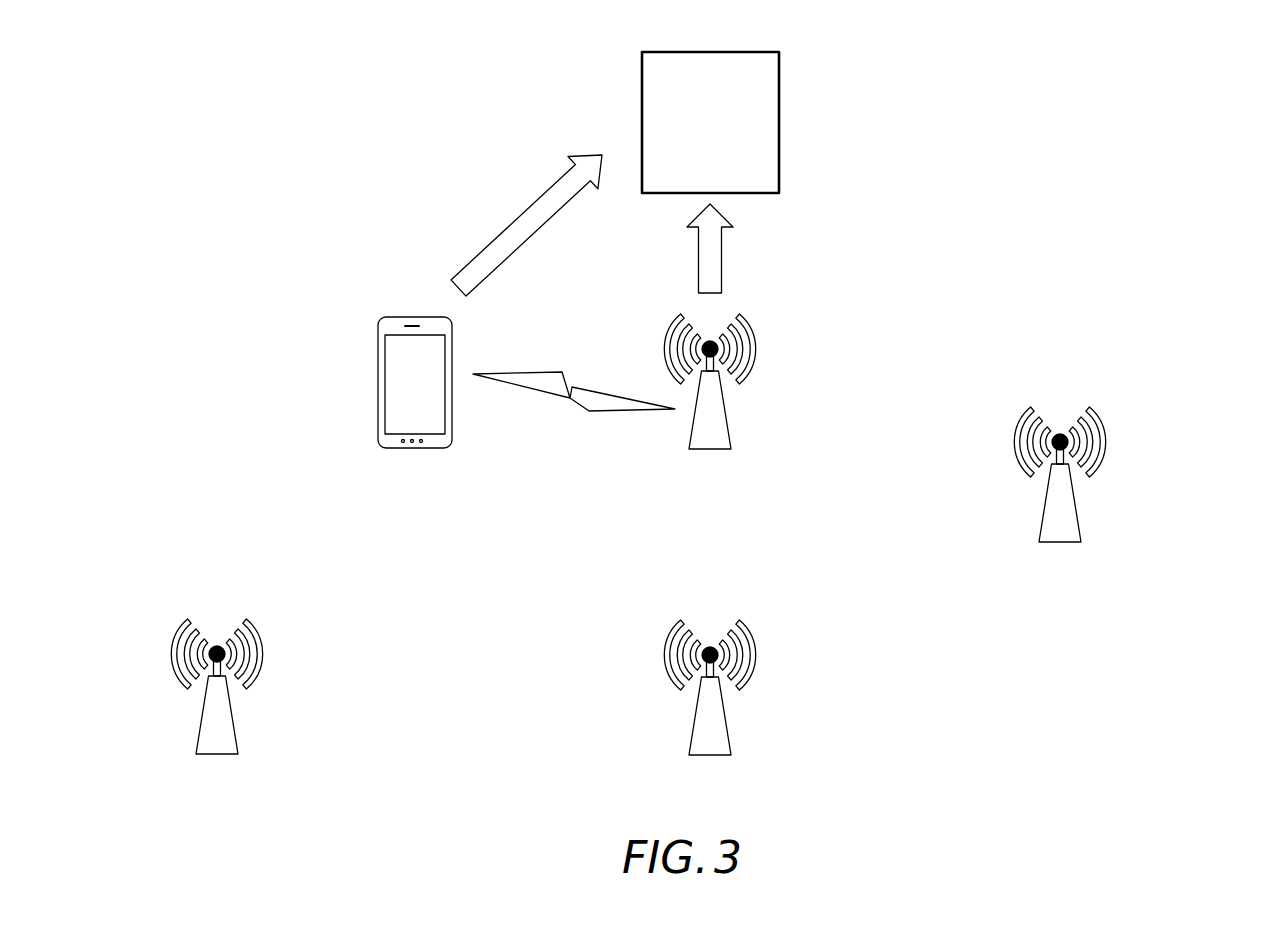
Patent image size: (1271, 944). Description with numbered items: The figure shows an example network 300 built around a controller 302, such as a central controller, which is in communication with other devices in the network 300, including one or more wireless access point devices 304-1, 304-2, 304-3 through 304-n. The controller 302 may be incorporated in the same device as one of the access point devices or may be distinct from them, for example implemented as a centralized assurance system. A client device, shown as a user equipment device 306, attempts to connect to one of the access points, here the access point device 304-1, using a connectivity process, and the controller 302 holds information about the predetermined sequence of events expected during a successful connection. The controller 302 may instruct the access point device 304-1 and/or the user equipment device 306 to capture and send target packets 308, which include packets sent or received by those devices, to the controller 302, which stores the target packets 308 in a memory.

The network 300 is at (1103, 66).
The controller 302 is at (717, 51).
The wireless access point device 304-1 is at (740, 318).
The wireless access point device 304-2 is at (244, 627).
The wireless access point device 304-3 is at (740, 626).
The wireless access point device 304-n is at (1092, 413).
The user equipment device 306 is at (412, 316).
The target packets 308 is at (515, 220).